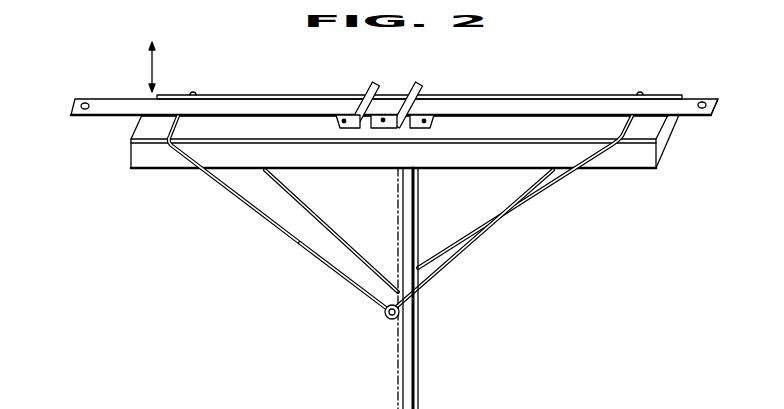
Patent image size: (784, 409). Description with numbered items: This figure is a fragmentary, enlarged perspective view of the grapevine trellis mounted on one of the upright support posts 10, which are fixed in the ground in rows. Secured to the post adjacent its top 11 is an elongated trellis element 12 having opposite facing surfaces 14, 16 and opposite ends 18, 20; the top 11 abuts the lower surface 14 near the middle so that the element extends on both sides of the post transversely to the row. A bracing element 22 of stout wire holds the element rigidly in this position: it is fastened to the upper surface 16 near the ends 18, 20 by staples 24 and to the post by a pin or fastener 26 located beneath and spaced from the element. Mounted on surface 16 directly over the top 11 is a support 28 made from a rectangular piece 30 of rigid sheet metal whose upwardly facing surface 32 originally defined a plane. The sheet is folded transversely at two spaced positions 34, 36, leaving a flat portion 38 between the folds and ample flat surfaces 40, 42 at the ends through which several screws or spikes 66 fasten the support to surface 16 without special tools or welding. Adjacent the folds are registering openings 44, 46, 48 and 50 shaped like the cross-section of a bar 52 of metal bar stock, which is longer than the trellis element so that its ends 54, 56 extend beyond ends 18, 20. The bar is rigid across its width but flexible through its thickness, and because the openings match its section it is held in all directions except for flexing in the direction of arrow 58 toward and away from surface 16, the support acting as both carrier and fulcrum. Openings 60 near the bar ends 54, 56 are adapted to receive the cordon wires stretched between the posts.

The support post 10 is at (408, 358).
The top of post 11 is at (416, 170).
The trellis element 12 is at (624, 170).
The surface of trellis element 14 is at (588, 169).
The surface of trellis element 16 is at (655, 122).
The end of trellis element 18 is at (130, 160).
The end of trellis element 20 is at (665, 150).
The bracing element 22 is at (300, 229).
The staples 24 is at (176, 130).
The pin or fastener 26 is at (385, 312).
The support 28 is at (428, 80).
The rectangular piece of rigid sheet metal 30 is at (383, 97).
The upwardly facing surface 32 is at (412, 129).
The fold 34 is at (376, 88).
The fold 36 is at (419, 86).
The portion of surface 38 is at (374, 129).
The flat surface 40 is at (339, 125).
The flat surface 42 is at (433, 124).
The opening 44 is at (363, 113).
The opening 46 is at (388, 110).
The opening 48 is at (393, 108).
The opening 50 is at (432, 99).
The bar 52 is at (540, 97).
The end of bar 54 is at (73, 104).
The end of bar 56 is at (720, 100).
The arrow 58 is at (156, 44).
The openings 60 is at (86, 102).
The screws or spikes 66 is at (346, 125).